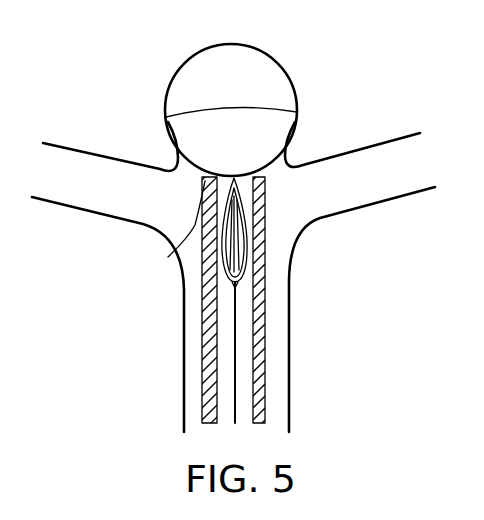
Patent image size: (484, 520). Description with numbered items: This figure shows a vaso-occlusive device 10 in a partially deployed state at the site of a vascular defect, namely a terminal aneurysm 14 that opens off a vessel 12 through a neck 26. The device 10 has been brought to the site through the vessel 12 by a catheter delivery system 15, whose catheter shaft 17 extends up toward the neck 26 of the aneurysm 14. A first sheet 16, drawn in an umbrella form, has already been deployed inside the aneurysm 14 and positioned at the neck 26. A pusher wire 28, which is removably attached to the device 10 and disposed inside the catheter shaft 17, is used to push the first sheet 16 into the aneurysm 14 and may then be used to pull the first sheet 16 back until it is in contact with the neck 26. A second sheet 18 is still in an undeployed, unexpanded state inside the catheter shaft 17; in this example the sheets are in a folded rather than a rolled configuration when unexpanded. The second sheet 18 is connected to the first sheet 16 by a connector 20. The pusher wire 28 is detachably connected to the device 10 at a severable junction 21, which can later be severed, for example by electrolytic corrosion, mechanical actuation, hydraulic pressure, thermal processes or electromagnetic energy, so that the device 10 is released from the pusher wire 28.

The vaso-occlusive device 10 is at (2, 509).
The vessel 12 is at (53, 207).
The terminal aneurysm 14 is at (215, 44).
The catheter delivery system 15 is at (268, 333).
The first sheet 16 is at (228, 122).
The catheter shaft 17 is at (206, 397).
The second sheet 18 is at (245, 245).
The connector 20 is at (166, 230).
The junction 21 is at (240, 285).
The neck 26 is at (176, 159).
The pusher wire 28 is at (237, 382).